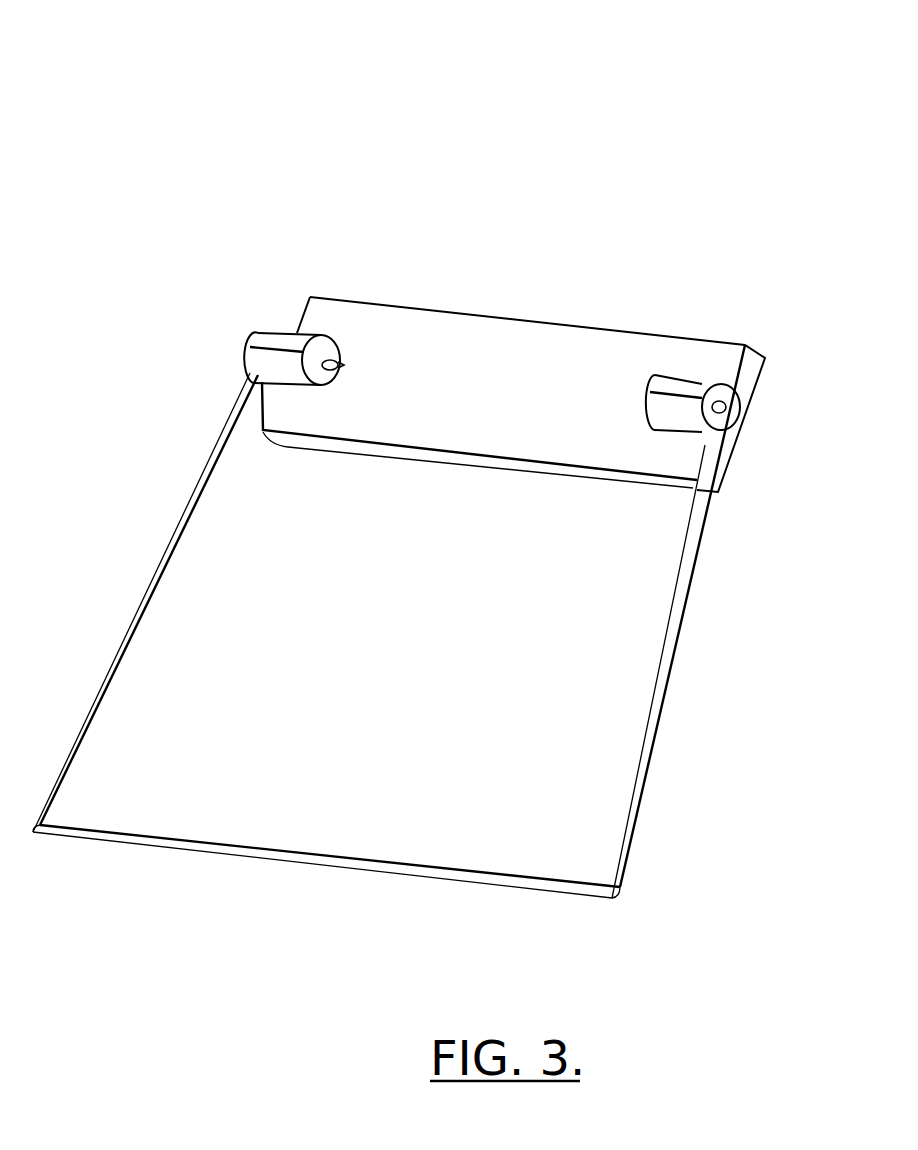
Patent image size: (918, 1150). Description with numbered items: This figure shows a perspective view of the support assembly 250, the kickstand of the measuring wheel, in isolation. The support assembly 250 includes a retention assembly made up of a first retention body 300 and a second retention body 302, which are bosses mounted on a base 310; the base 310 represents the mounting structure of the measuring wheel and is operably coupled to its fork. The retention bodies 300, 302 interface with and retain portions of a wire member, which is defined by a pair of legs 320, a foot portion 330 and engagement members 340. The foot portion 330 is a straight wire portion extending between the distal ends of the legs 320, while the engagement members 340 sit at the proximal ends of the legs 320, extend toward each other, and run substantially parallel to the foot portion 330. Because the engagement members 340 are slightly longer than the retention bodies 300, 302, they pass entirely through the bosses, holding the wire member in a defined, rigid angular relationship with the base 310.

The support assembly 250 is at (243, 98).
The first retention body 300 is at (285, 333).
The second retention body 302 is at (687, 383).
The base 310 is at (500, 360).
The legs 320 is at (170, 562).
The foot portion 330 is at (348, 865).
The engagement members 340 is at (333, 367).